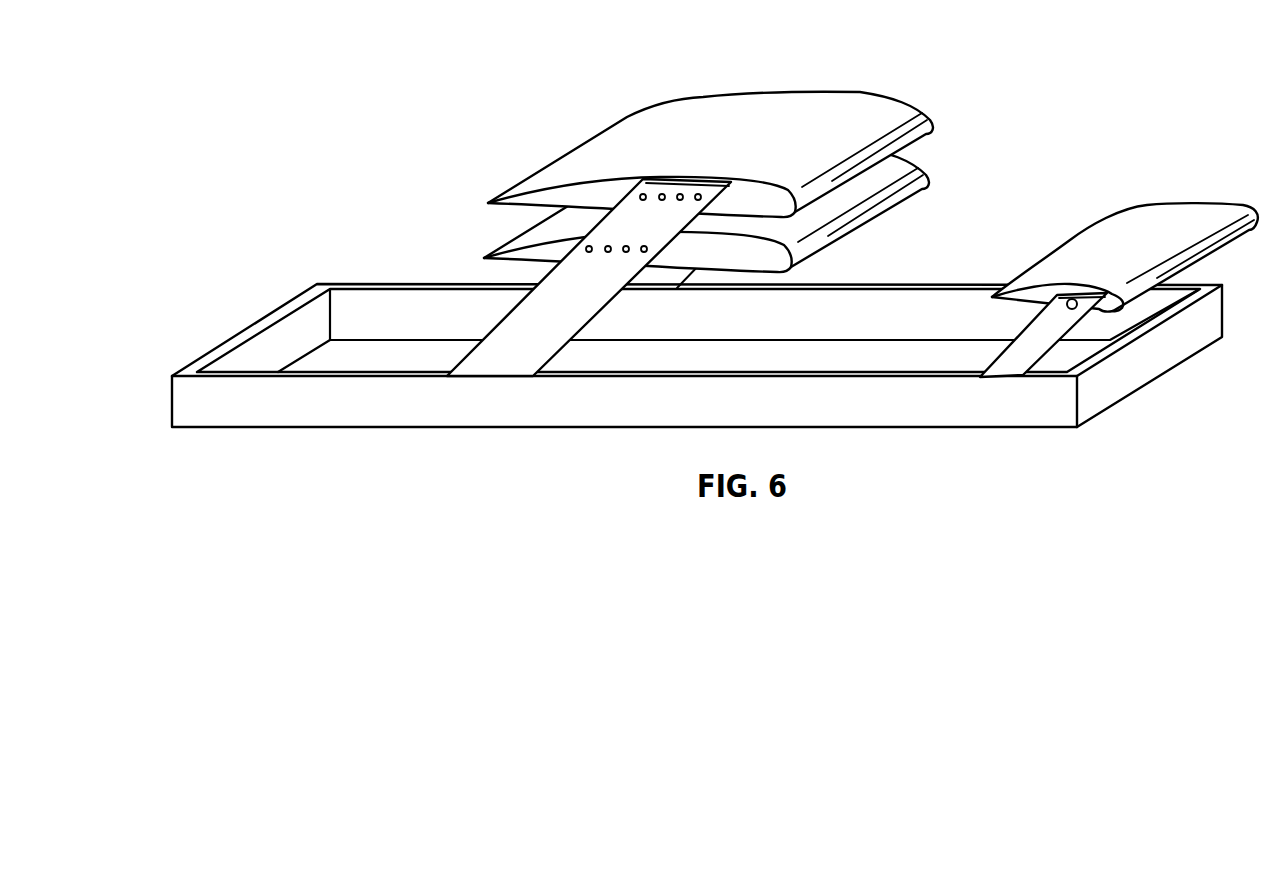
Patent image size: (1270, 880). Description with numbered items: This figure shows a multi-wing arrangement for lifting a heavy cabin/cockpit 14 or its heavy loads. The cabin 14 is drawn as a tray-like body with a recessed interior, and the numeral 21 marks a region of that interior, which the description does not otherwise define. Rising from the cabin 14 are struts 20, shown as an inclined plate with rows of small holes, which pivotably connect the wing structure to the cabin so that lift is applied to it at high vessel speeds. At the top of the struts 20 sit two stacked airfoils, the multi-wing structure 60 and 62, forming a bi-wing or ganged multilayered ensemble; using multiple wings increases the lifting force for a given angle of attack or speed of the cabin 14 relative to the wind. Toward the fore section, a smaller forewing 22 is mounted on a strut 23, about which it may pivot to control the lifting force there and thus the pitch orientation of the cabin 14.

The cabin 14 is at (462, 428).
The struts 20 is at (497, 325).
The tray cavity floor 21 is at (798, 368).
The forewing 22 is at (1165, 221).
The strut 23 is at (1018, 330).
The multi-wing structure 60 is at (888, 108).
The multi-wing structure 62 is at (873, 208).